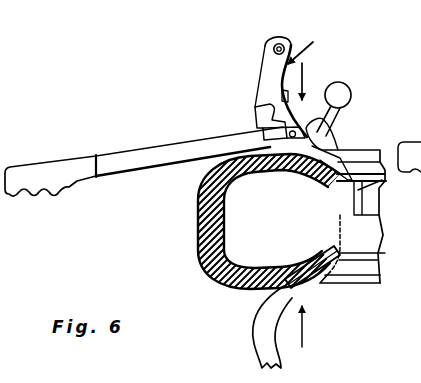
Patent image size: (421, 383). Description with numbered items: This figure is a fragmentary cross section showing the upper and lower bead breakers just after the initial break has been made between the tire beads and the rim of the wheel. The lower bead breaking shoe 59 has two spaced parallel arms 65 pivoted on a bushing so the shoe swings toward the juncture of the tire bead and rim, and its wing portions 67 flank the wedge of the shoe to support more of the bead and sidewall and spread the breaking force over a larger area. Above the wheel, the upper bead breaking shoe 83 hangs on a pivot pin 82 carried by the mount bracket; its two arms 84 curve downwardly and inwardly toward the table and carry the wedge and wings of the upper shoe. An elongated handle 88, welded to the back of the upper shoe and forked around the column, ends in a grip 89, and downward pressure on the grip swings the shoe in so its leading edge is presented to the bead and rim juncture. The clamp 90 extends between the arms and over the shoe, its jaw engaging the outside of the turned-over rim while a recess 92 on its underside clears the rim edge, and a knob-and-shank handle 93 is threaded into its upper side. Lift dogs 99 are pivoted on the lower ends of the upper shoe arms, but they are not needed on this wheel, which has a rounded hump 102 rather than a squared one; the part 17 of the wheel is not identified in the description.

The wheel rim 17 is at (378, 150).
The lower bead breaking shoe 59 is at (312, 268).
The arms 65 is at (264, 345).
The wing portions 67 is at (340, 286).
The pivot pin 82 is at (280, 41).
The upper bead breaking shoe 83 is at (311, 66).
The arms 84 is at (262, 75).
The handle 88 is at (146, 150).
The grip 89 is at (40, 166).
The clamp 90 is at (342, 135).
The recess 92 is at (320, 178).
The handle 93 is at (345, 90).
The lift dogs 99 is at (257, 106).
The rounded hump 102 is at (384, 181).